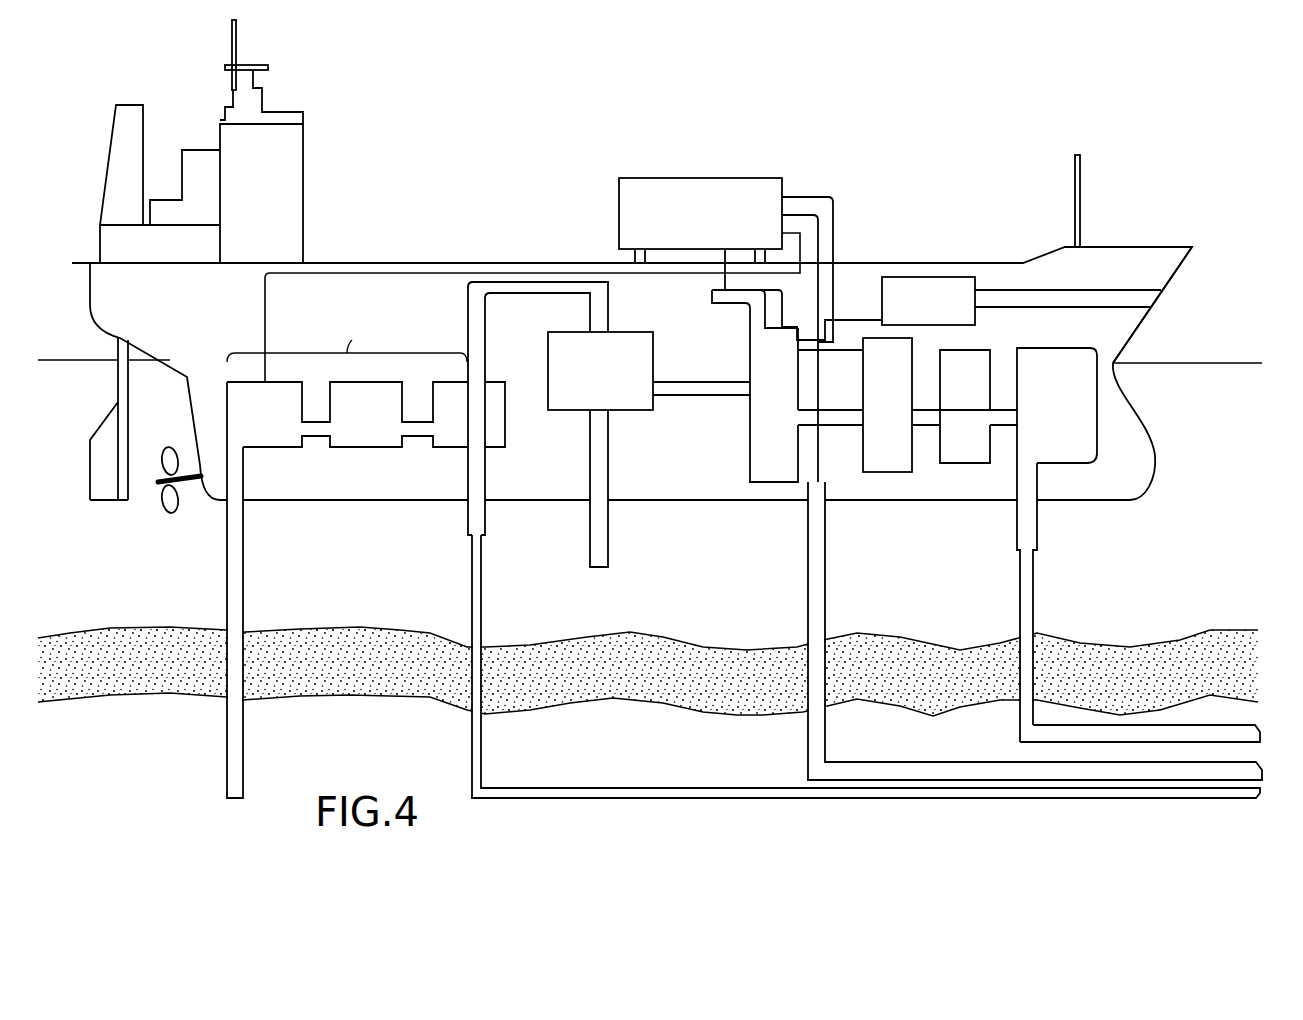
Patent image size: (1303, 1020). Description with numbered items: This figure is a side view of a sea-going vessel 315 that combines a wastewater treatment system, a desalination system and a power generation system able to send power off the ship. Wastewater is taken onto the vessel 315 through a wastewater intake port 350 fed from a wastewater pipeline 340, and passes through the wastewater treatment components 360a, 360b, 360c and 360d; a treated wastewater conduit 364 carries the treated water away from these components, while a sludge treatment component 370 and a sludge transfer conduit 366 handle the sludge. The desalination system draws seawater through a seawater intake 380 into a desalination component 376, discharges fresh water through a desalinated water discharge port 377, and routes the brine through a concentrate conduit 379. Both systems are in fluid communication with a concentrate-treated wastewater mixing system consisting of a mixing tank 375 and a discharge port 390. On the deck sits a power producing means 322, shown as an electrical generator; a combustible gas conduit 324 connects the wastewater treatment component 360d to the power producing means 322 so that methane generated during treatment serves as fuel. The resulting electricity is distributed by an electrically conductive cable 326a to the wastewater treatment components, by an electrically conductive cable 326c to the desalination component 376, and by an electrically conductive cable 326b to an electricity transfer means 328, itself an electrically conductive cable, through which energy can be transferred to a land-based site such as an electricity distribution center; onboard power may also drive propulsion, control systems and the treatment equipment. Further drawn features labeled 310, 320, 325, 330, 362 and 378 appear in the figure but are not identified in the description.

The ship 310 is at (462, 143).
The sea-going vessel 315 is at (1163, 232).
The body of water 320 is at (1222, 528).
The power producing means 322 is at (692, 178).
The combustible gas conduit 324 is at (712, 296).
The seabed sediment layer 325 is at (126, 645).
The electrically conductive cable 326a is at (802, 197).
The electrically conductive cable 326b is at (818, 227).
The electrically conductive cable 326c is at (535, 282).
The electricity transfer means 328 is at (808, 520).
The conduit 330 is at (385, 295).
The WW pipeline 340 is at (1017, 724).
The wastewater intake port 350 is at (1015, 537).
The WW treatment component 360a is at (1103, 410).
The WW treatment component 360b is at (990, 347).
The WW treatment component 360c is at (858, 350).
The WW treatment component 360d is at (750, 360).
The pipe 362 is at (835, 400).
The treated WW conduit 364 is at (717, 397).
The sludge transfer conduit 366 is at (1123, 290).
The sludge treatment component 370 is at (912, 277).
The mixing tank 375 is at (565, 412).
The desalination component 376 is at (366, 378).
The desalinated water discharge port 377 is at (468, 520).
The pipe 378 is at (485, 578).
The concentrate conduit 379 is at (518, 295).
The SW intake 380 is at (233, 798).
The discharge port 390 is at (600, 568).